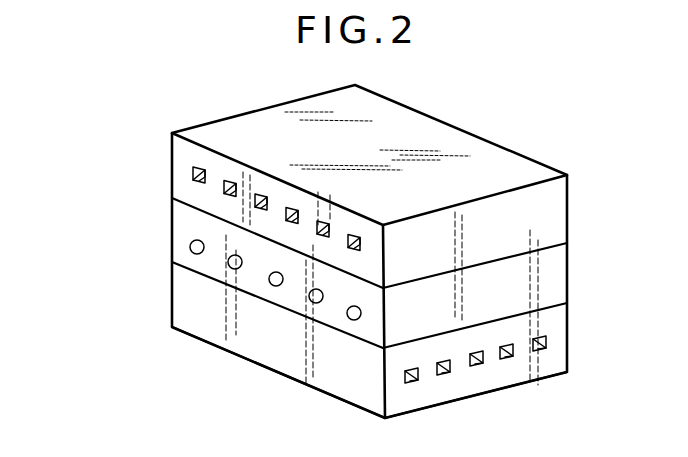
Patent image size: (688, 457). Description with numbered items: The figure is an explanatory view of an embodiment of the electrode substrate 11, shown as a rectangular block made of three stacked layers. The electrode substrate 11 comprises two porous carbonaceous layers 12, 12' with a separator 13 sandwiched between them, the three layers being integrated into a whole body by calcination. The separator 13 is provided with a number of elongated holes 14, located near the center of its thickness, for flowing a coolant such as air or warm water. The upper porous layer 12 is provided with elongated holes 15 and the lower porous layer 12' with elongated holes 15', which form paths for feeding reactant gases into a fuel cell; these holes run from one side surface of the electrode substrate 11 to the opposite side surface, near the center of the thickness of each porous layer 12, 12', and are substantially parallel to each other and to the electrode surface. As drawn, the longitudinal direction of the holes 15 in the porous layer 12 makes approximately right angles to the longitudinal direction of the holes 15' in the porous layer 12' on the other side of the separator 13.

The electrode substrate 11 is at (92, 330).
The porous carbonaceous layer 12 is at (404, 241).
The separator 13 is at (562, 296).
The porous carbonaceous layer 12' is at (405, 372).
The elongated holes 14 is at (190, 249).
The elongated holes 15 is at (227, 208).
The elongated holes 15' is at (486, 384).